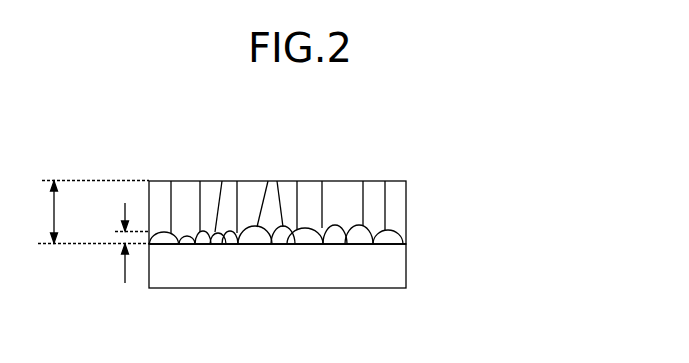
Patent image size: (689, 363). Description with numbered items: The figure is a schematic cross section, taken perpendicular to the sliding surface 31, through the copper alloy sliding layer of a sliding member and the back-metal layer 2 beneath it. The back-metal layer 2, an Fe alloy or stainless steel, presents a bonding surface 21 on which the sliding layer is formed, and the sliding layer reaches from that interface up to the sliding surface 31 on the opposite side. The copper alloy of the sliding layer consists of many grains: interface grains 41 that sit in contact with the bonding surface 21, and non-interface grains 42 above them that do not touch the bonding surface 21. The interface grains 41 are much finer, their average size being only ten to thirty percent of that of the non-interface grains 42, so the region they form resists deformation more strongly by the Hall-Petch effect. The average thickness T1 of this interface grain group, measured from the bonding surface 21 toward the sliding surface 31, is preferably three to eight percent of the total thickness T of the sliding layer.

The back-metal layer 2 is at (362, 275).
The bonding surface 21 is at (302, 248).
The sliding surface 31 is at (278, 181).
The interface grains 41 is at (398, 238).
The non-interface grains 42 is at (397, 198).
The thickness of the sliding layer T is at (89, 212).
The average thickness of the interface grain group T1 is at (121, 243).